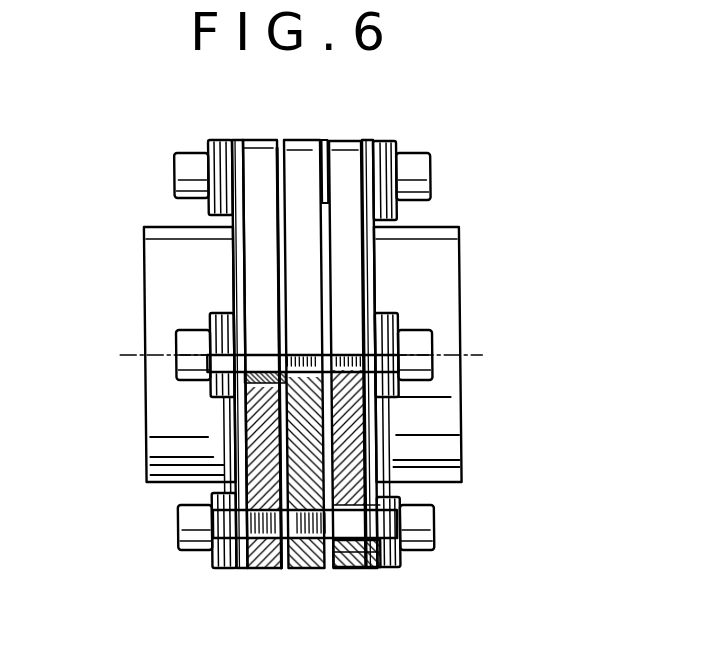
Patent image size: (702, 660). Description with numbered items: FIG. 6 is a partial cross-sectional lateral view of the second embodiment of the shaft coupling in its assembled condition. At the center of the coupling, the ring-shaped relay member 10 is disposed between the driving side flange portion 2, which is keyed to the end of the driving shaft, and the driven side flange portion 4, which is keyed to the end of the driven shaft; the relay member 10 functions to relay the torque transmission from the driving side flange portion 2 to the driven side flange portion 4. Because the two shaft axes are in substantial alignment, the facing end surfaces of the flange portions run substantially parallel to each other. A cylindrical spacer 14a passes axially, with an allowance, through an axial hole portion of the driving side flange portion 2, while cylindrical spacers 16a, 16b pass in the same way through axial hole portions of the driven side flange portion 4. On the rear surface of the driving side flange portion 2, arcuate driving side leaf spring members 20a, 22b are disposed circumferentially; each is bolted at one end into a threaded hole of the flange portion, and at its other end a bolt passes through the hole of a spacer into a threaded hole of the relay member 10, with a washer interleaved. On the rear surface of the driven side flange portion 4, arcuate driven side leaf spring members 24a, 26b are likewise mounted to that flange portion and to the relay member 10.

The driving side flange portion 2 is at (253, 146).
The relay member 10 is at (291, 150).
The driven side flange portion 4 is at (345, 163).
The cylindrical spacer 16a is at (323, 170).
The cylindrical spacer 16b is at (352, 568).
The cylindrical spacer 14a is at (240, 407).
The driving side leaf spring member 20a is at (227, 260).
The driven side leaf spring member 24a is at (373, 260).
The driving side leaf spring member 22b is at (220, 427).
The driven side leaf spring member 26b is at (393, 452).